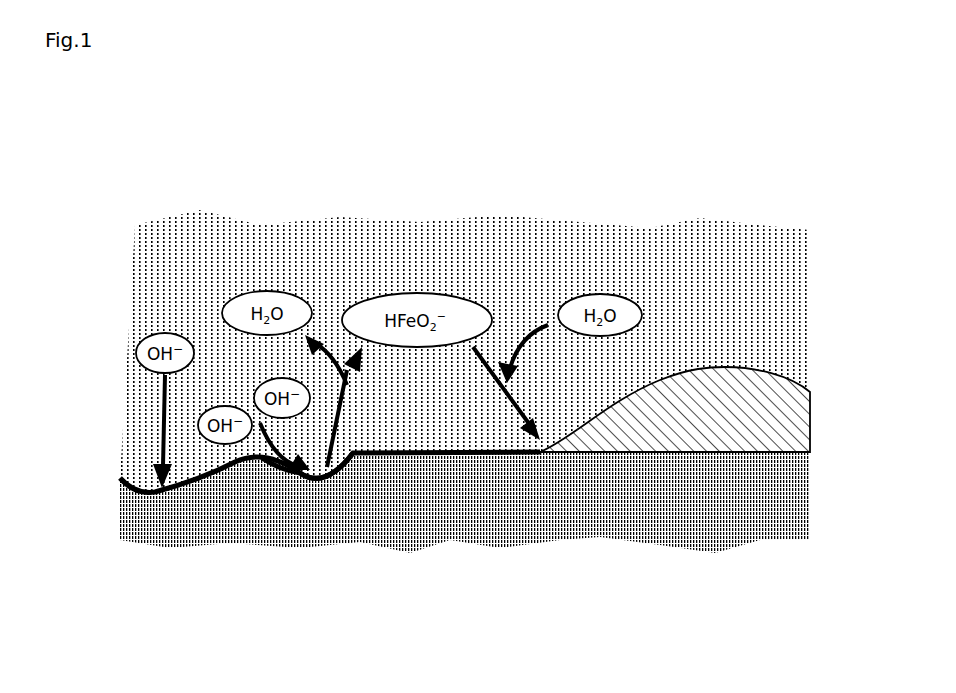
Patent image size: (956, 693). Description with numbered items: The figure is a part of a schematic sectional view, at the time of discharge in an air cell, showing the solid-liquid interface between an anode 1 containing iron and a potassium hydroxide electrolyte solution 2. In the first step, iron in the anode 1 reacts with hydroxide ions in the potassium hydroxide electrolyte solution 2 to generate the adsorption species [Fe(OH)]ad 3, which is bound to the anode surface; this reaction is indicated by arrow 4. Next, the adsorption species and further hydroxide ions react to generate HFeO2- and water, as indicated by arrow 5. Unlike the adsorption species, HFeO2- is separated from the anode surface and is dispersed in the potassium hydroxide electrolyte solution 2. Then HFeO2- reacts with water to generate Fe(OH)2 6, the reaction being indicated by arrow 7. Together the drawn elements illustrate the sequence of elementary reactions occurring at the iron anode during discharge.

The anode 1 is at (240, 493).
The potassium hydroxide electrolyte solution 2 is at (224, 253).
The [Fe(OH)]ad adsorption species 3 is at (408, 457).
The arrow 4 is at (160, 412).
The arrow 5 is at (345, 455).
The Fe(OH)2 6 is at (663, 437).
The arrow 7 is at (500, 460).